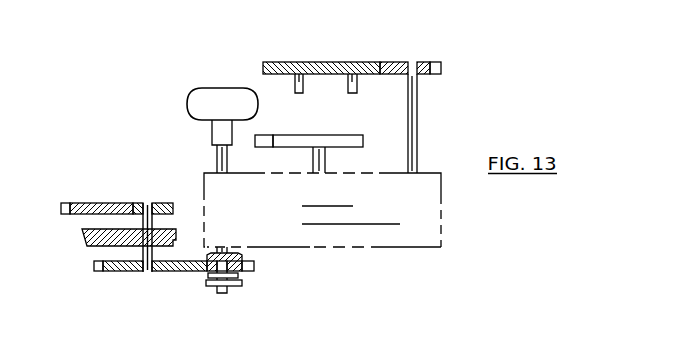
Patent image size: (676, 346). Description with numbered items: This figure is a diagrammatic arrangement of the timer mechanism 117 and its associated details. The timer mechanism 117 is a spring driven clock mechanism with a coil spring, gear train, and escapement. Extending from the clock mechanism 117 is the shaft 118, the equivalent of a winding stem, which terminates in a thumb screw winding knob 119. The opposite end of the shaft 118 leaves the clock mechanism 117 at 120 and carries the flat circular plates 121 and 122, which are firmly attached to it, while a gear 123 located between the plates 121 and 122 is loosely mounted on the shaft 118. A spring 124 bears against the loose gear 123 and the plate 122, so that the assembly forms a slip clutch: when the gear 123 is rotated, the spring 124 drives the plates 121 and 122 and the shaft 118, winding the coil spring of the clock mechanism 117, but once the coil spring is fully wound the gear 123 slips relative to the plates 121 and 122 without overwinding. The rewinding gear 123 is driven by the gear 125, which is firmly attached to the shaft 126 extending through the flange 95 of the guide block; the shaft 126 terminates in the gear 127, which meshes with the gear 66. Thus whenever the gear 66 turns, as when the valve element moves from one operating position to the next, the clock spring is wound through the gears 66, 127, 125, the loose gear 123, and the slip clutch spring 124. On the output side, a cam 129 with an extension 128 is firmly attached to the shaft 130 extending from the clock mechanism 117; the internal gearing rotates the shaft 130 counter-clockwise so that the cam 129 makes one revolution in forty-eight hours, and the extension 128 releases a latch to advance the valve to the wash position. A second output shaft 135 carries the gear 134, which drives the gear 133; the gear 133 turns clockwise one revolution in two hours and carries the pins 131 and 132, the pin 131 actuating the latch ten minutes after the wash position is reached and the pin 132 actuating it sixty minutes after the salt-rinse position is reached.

The gear 66 is at (92, 203).
The top flange 95 is at (88, 246).
The timer mechanism 117 is at (433, 239).
The shaft 118 is at (220, 162).
The thumb screw winding knob 119 is at (210, 90).
The shaft end 120 is at (232, 240).
The flat circular plate 121 is at (206, 283).
The flat circular plate 122 is at (213, 253).
The gear 123 is at (248, 272).
The spring 124 is at (205, 274).
The gear 125 is at (95, 271).
The shaft 126 is at (157, 227).
The gear 127 is at (133, 203).
The extension 128 is at (265, 139).
The cam 129 is at (345, 139).
The shaft 130 is at (320, 162).
The pin 131 is at (357, 63).
The pin 132 is at (304, 62).
The gear 133 is at (285, 62).
The gear 134 is at (422, 63).
The shaft 135 is at (416, 115).